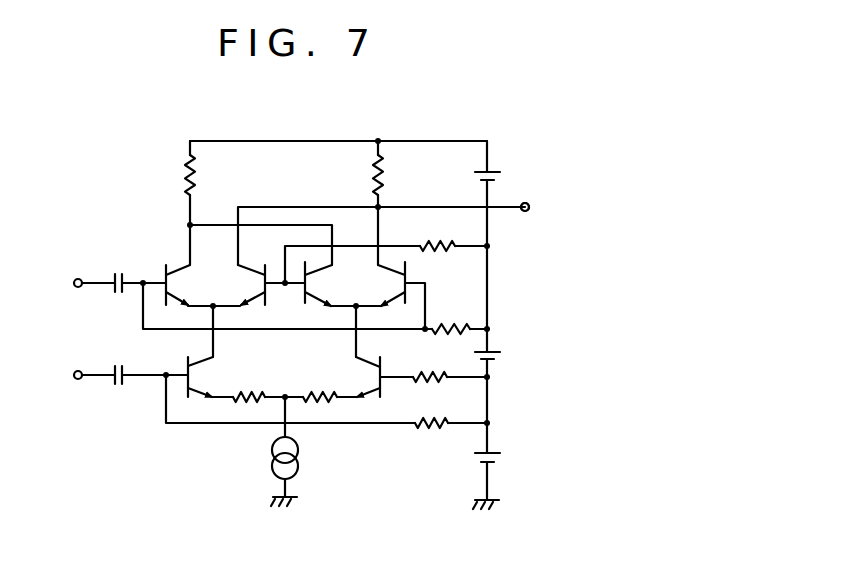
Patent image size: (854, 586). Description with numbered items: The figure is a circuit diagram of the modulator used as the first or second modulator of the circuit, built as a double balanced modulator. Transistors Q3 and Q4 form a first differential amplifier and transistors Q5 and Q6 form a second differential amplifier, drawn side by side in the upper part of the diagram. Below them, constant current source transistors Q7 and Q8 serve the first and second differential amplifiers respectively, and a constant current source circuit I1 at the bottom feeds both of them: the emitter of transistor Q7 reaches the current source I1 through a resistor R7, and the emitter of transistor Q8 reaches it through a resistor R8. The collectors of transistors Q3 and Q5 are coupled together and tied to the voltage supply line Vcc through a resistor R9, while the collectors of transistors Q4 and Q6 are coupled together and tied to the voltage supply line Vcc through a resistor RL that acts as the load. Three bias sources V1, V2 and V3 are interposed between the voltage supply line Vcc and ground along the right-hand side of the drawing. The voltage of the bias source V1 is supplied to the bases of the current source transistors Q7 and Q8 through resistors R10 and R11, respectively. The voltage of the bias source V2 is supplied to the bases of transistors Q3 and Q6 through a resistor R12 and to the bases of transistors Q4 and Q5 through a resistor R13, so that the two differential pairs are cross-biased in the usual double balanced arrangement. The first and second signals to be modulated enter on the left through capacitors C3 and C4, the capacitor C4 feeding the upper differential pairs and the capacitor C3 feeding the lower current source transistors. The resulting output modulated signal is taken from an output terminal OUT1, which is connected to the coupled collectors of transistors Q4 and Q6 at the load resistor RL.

The voltage supply line Vcc is at (445, 141).
The resistor R9 is at (203, 178).
The resistor as a load RL is at (383, 178).
The bias source V3 is at (503, 175).
The output terminal OUT1 is at (540, 207).
The resistor R13 is at (433, 252).
The capacitor C4 is at (117, 273).
The transistor Q3 is at (182, 287).
The transistor Q4 is at (252, 283).
The transistor Q5 is at (316, 283).
The transistor Q6 is at (392, 286).
The resistor R12 is at (447, 338).
The bias source V2 is at (500, 357).
The constant current source transistor Q7 is at (202, 373).
The resistor R7 is at (252, 388).
The constant current source transistor Q8 is at (369, 375).
The resistor R11 is at (435, 383).
The capacitor C3 is at (113, 390).
The constant current source circuit I1 is at (270, 457).
The resistor R8 is at (313, 405).
The resistor R10 is at (428, 430).
The bias source V1 is at (502, 460).